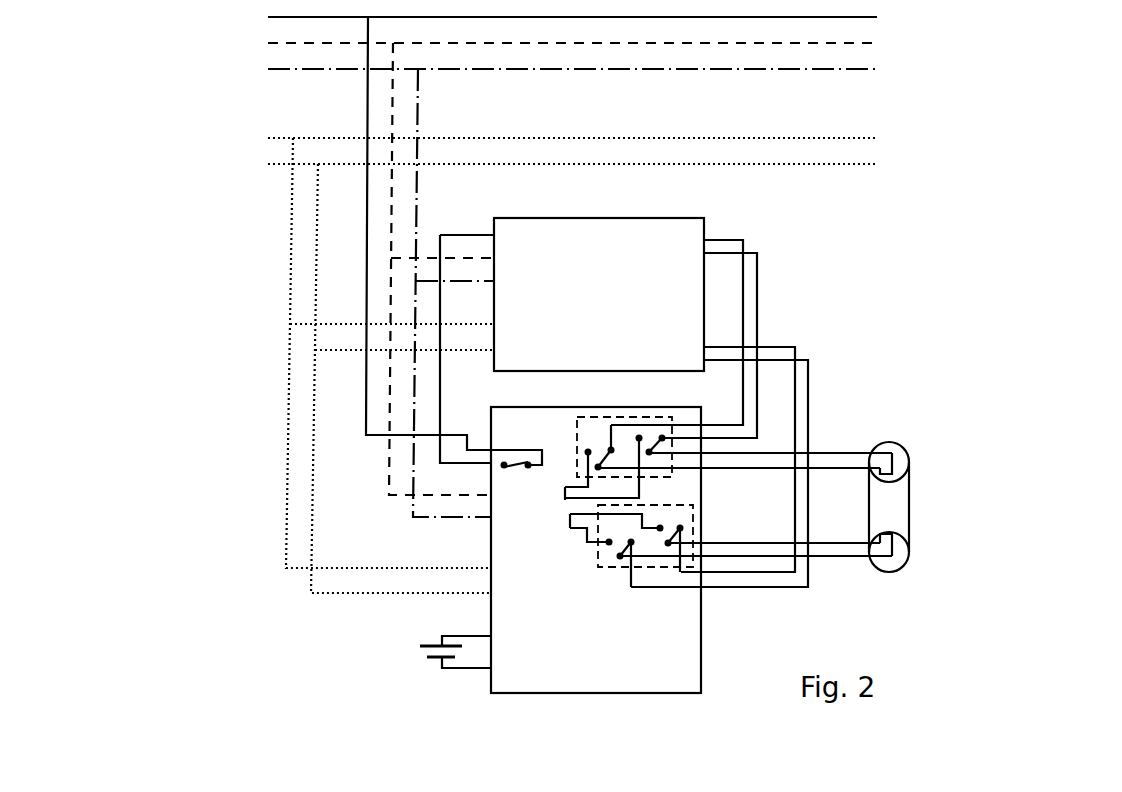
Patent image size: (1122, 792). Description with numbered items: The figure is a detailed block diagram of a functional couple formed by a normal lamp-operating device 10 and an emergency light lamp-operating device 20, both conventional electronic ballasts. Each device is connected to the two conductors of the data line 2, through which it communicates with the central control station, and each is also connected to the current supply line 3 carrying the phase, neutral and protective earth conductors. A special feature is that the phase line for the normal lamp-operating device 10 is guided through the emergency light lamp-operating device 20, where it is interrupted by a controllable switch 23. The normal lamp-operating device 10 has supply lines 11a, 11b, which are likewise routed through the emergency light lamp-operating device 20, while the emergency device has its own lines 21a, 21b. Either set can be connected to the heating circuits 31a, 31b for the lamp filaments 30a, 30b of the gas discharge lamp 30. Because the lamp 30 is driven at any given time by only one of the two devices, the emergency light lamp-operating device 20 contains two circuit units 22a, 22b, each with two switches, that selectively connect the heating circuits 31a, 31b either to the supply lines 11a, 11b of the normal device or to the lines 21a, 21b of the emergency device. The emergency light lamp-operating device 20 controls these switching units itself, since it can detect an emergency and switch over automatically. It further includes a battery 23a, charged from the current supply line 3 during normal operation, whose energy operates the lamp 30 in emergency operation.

The data line 2 is at (788, 167).
The current supply line 3 is at (528, 70).
The normal lamp-operating device 10 is at (612, 218).
The supply line 11a is at (749, 252).
The supply line 11b is at (797, 348).
The emergency light lamp-operating device 20 is at (701, 648).
The line 21a is at (571, 483).
The line 21b is at (575, 530).
The circuit unit 22a is at (673, 476).
The circuit unit 22b is at (693, 530).
The controllable switch 23 is at (503, 467).
The battery 23a is at (437, 658).
The gas discharge lamp 30 is at (915, 507).
The lamp filament 30a is at (907, 453).
The lamp filament 30b is at (907, 550).
The heating circuit 31a is at (843, 452).
The heating circuit 31b is at (843, 557).